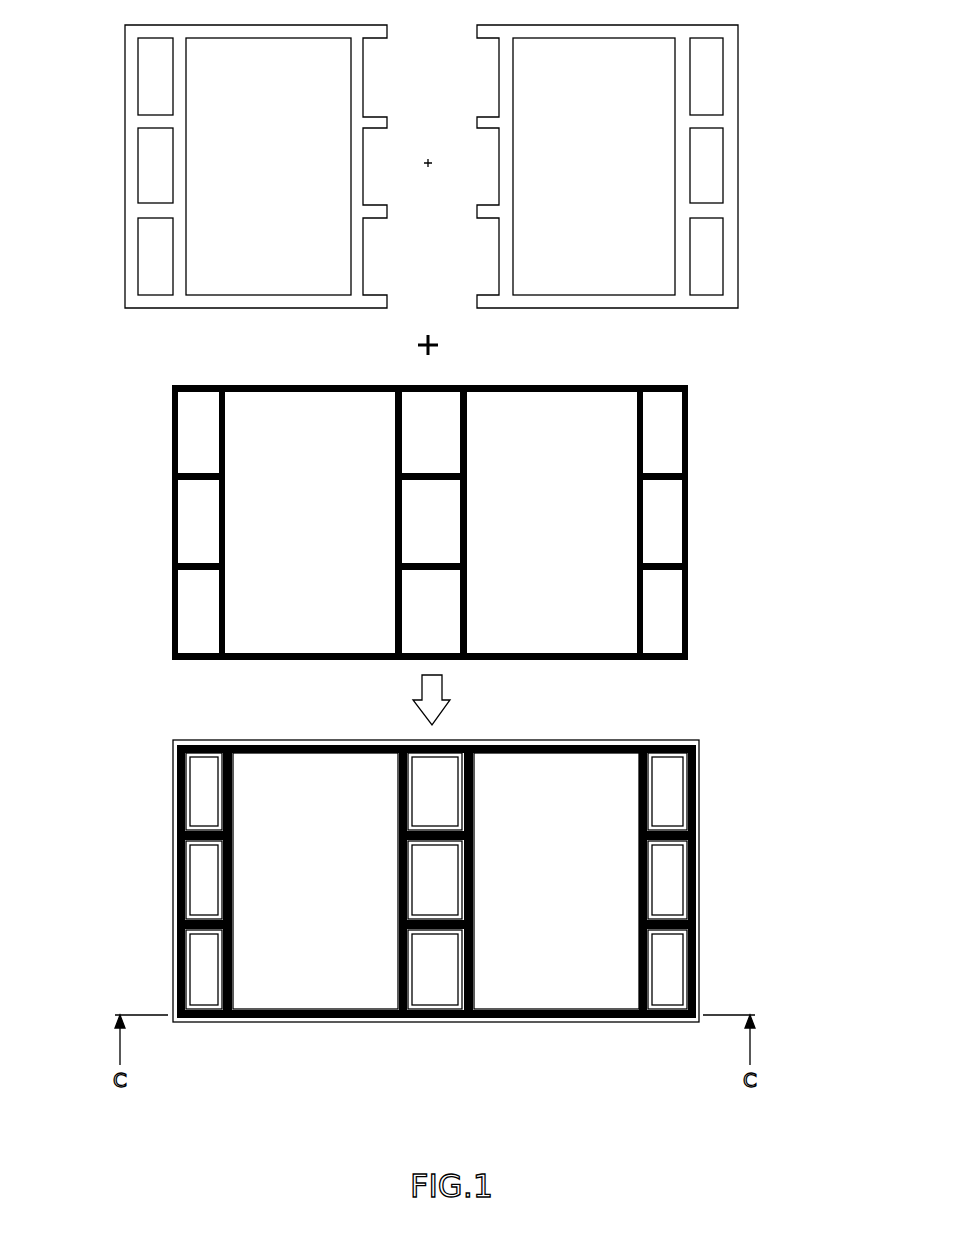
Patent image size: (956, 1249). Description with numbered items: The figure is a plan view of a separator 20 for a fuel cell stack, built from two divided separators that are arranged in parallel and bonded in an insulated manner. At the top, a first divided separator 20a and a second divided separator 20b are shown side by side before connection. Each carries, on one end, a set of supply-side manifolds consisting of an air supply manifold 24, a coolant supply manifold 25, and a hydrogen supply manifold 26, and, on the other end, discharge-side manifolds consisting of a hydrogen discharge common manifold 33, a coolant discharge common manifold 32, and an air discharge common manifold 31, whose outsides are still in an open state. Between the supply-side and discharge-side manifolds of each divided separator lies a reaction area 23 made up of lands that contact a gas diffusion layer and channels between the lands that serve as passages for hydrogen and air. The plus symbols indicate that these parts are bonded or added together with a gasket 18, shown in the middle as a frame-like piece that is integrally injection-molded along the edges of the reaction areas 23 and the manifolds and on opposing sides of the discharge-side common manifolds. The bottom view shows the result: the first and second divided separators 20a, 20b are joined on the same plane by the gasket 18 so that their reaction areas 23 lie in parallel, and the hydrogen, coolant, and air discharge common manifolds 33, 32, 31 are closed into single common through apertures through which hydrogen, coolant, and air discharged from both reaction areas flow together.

The gasket 18 is at (163, 483).
The separator 20 is at (450, 1045).
The first divided separator 20a is at (120, 297).
The second divided separator 20b is at (745, 296).
The reaction area 23 is at (232, 275).
The air supply manifold 24 is at (152, 73).
The coolant supply manifold 25 is at (152, 165).
The hydrogen supply manifold 26 is at (148, 255).
The air discharge common manifold 31 is at (498, 252).
The coolant discharge common manifold 32 is at (498, 185).
The hydrogen discharge common manifold 33 is at (498, 72).